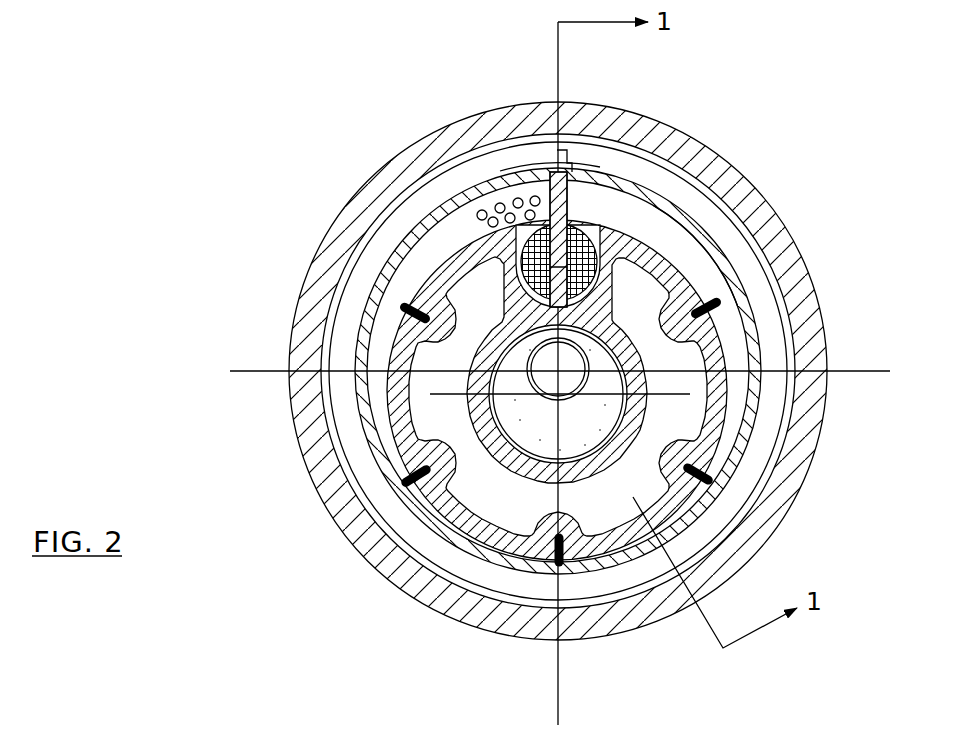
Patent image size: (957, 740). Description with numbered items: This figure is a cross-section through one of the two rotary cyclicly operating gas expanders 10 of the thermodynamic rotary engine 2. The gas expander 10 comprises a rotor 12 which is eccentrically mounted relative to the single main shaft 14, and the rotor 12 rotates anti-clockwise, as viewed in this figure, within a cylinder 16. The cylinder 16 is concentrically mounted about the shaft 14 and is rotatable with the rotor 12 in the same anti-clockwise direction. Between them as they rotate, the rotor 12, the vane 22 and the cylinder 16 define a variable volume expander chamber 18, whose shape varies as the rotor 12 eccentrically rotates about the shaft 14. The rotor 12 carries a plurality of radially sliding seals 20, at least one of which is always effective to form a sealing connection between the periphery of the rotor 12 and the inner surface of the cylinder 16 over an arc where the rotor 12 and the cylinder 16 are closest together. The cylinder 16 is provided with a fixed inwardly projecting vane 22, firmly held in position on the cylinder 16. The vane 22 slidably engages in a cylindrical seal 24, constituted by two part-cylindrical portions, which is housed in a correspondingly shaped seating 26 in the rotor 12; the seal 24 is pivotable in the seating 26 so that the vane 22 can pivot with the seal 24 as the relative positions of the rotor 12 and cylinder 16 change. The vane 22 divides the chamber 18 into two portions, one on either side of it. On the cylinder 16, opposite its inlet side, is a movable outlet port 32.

The thermodynamic rotary engine 2 is at (285, 242).
The gas expander 10 is at (498, 572).
The rotor 12 is at (716, 338).
The main shaft 14 is at (550, 377).
The cylinder 16 is at (720, 250).
The variable volume expander chamber 18 is at (633, 180).
The radially sliding seals 20 is at (718, 303).
The vane 22 is at (610, 207).
The cylindrical seal 24 is at (500, 232).
The seating 26 is at (512, 295).
The movable outlet port 32 is at (507, 190).